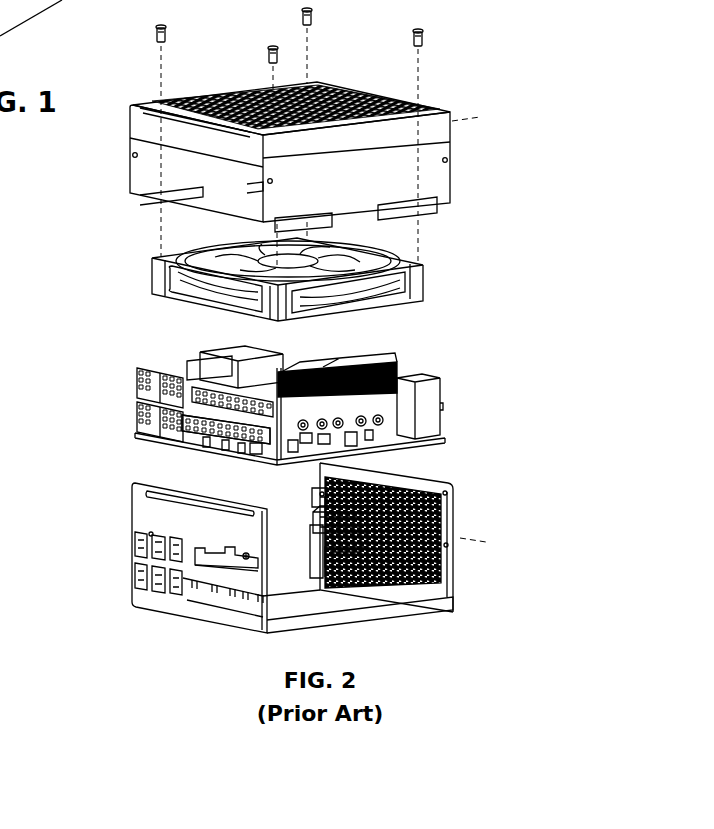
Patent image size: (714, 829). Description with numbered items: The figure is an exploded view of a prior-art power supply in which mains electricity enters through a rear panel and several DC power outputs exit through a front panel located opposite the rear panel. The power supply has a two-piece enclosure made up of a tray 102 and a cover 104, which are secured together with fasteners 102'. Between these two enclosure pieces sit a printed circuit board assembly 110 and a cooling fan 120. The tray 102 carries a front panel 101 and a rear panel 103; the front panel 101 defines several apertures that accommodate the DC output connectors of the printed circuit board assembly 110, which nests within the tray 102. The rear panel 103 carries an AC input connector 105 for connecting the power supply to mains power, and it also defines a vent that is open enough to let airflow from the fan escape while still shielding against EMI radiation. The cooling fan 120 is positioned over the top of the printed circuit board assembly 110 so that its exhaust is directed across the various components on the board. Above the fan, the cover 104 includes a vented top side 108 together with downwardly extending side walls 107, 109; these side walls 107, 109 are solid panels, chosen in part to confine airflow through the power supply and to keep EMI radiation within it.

The front panel 101 is at (140, 510).
The tray 102 is at (266, 539).
The fasteners 102' is at (289, 138).
The rear panel 103 is at (462, 505).
The cover 104 is at (247, 138).
The AC input connector 105 is at (313, 532).
The side wall 107 is at (129, 128).
The vented top side 108 is at (338, 92).
The side wall 109 is at (435, 185).
The printed circuit board assembly 110 is at (235, 413).
The cooling fan 120 is at (144, 297).